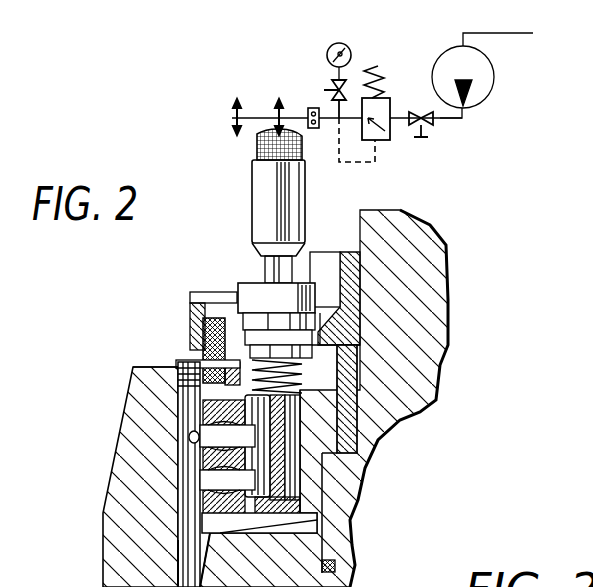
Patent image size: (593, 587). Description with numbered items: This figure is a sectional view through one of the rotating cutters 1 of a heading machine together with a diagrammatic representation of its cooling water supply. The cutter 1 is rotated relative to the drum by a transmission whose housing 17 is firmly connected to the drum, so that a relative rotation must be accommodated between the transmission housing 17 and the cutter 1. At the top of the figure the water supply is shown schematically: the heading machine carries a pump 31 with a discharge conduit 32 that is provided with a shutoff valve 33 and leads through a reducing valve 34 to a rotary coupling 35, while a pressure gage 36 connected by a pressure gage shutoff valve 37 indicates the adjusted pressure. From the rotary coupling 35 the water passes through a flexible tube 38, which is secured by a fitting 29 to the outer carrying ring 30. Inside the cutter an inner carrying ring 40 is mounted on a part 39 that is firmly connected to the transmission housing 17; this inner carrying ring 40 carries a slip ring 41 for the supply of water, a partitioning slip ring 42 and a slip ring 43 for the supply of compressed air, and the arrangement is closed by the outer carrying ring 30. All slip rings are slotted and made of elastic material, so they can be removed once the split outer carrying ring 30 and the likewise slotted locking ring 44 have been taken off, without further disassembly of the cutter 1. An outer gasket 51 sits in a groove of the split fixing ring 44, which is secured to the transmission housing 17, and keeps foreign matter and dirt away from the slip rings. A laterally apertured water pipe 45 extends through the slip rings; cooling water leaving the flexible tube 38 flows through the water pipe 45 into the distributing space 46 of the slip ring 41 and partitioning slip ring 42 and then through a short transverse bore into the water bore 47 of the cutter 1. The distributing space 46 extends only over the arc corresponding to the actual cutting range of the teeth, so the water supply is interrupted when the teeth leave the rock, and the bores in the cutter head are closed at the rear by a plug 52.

The rotating cutter 1 is at (135, 542).
The transmission housing 17 is at (418, 312).
The fitting 29 is at (283, 293).
The outer carrying ring 30 is at (350, 380).
The pump 31 is at (483, 80).
The discharge conduit 32 is at (457, 122).
The shutoff valve 33 is at (424, 124).
The reducing valve 34 is at (378, 136).
The rotary coupling 35 is at (317, 130).
The pressure gage 36 is at (327, 53).
The pressure gage shutoff valve 37 is at (332, 87).
The flexible tube 38 is at (270, 150).
The part 39 is at (257, 578).
The inner carrying ring 40 is at (350, 523).
The slip ring 41 is at (190, 403).
The partitioning slip ring 42 is at (200, 463).
The slip ring 43 is at (200, 503).
The locking ring 44 is at (192, 297).
The water pipe 45 is at (360, 478).
The distributing space 46 is at (200, 443).
The water bore 47 is at (185, 577).
The outer gasket 51 is at (206, 330).
The plug 52 is at (133, 369).